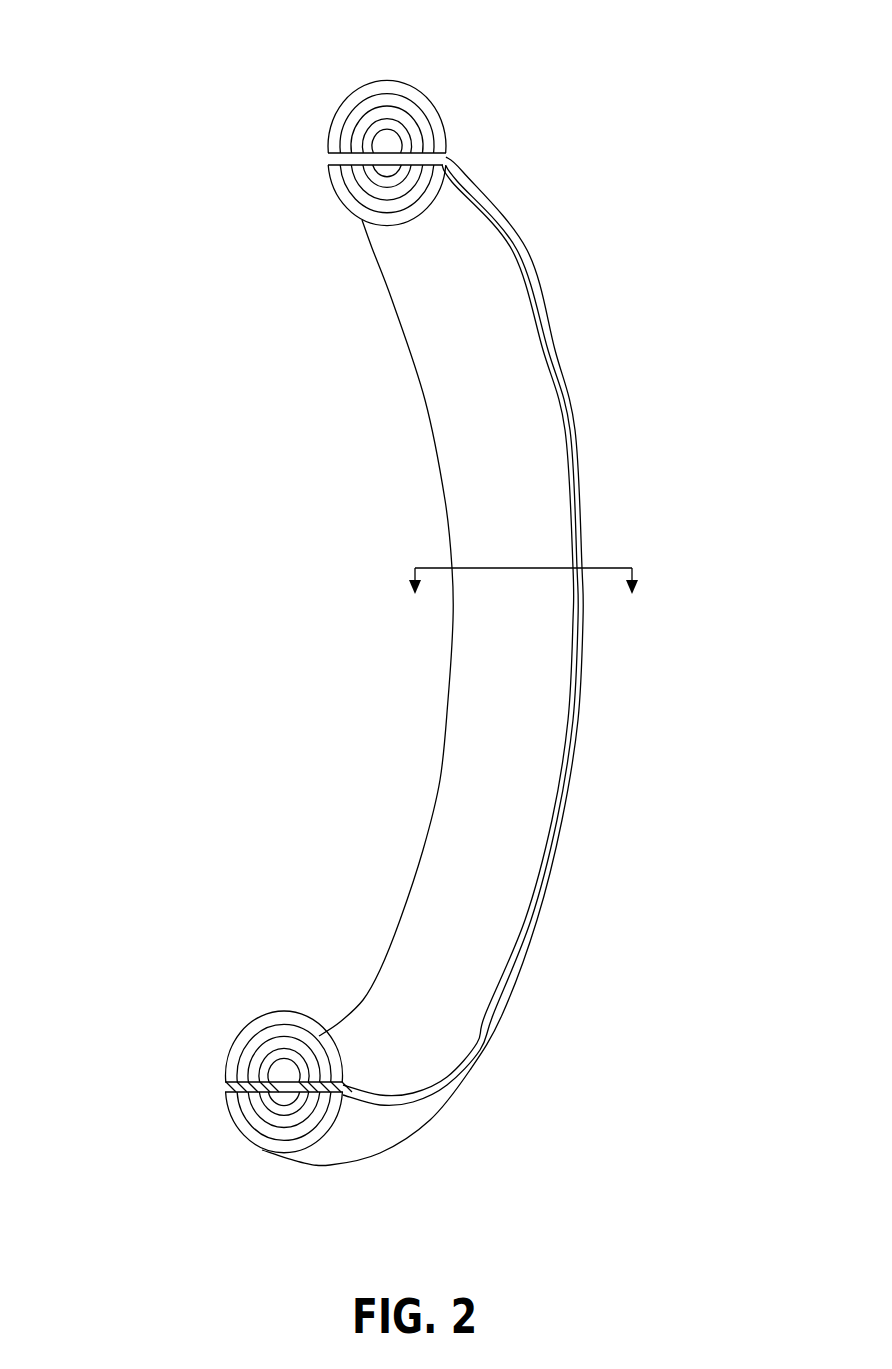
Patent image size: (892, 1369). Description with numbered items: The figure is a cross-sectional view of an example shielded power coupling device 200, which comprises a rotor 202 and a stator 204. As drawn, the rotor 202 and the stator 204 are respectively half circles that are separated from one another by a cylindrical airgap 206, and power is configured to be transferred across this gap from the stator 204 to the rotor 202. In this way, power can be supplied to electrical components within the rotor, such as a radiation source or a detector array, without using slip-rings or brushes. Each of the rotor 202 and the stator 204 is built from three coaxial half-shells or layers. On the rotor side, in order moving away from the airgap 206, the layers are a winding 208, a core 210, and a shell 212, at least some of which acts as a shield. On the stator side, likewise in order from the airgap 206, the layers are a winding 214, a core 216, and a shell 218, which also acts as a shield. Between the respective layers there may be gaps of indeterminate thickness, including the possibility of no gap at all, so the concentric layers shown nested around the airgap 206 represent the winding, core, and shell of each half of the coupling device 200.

The shielded power coupling device 200 is at (172, 26).
The rotor 202 is at (348, 240).
The stator 204 is at (327, 110).
The cylindrical airgap 206 is at (468, 165).
The winding 208 is at (382, 175).
The core 210 is at (382, 198).
The shell 212 is at (382, 222).
The winding 214 is at (390, 150).
The core 216 is at (404, 132).
The shell 218 is at (403, 105).